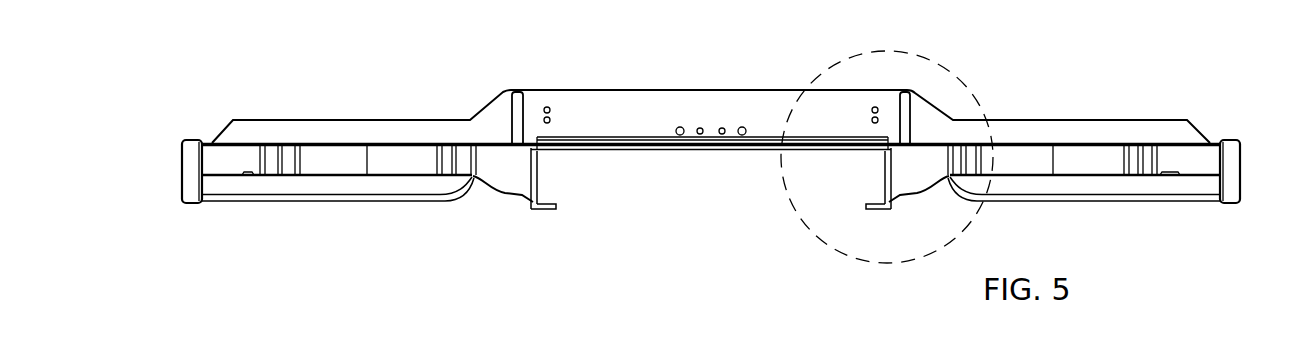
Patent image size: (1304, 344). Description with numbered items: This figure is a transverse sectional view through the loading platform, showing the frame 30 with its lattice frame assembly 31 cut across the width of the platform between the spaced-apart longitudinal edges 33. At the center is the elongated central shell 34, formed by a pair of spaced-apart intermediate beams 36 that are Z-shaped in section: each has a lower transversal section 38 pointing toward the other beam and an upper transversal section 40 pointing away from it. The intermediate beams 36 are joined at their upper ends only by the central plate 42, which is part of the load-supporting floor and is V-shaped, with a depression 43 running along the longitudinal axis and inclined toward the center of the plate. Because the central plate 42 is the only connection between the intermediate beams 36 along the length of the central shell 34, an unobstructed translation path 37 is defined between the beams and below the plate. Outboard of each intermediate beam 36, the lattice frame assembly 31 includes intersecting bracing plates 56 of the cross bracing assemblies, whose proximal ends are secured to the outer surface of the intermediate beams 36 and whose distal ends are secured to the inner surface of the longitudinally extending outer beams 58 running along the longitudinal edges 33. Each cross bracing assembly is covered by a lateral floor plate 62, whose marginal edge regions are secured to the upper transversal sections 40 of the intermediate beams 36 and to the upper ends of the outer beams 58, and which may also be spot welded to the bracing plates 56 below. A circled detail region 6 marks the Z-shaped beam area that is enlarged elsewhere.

The detail circle 6 is at (963, 83).
The frame 30 is at (1216, 104).
The lattice frame assembly 31 is at (1179, 234).
The longitudinal edges 33 is at (167, 132).
The elongated central shell 34 is at (677, 194).
The intermediate beams 36 is at (540, 176).
The translation path 37 is at (660, 176).
The lower transversal section 38 is at (543, 210).
The upper transversal section 40 is at (522, 94).
The central plate 42 is at (647, 137).
The depression 43 is at (712, 127).
The intersecting bracing plates 56 is at (262, 160).
The longitudinally extending outer beams 58 is at (182, 167).
The lateral floor plate 62 is at (347, 143).